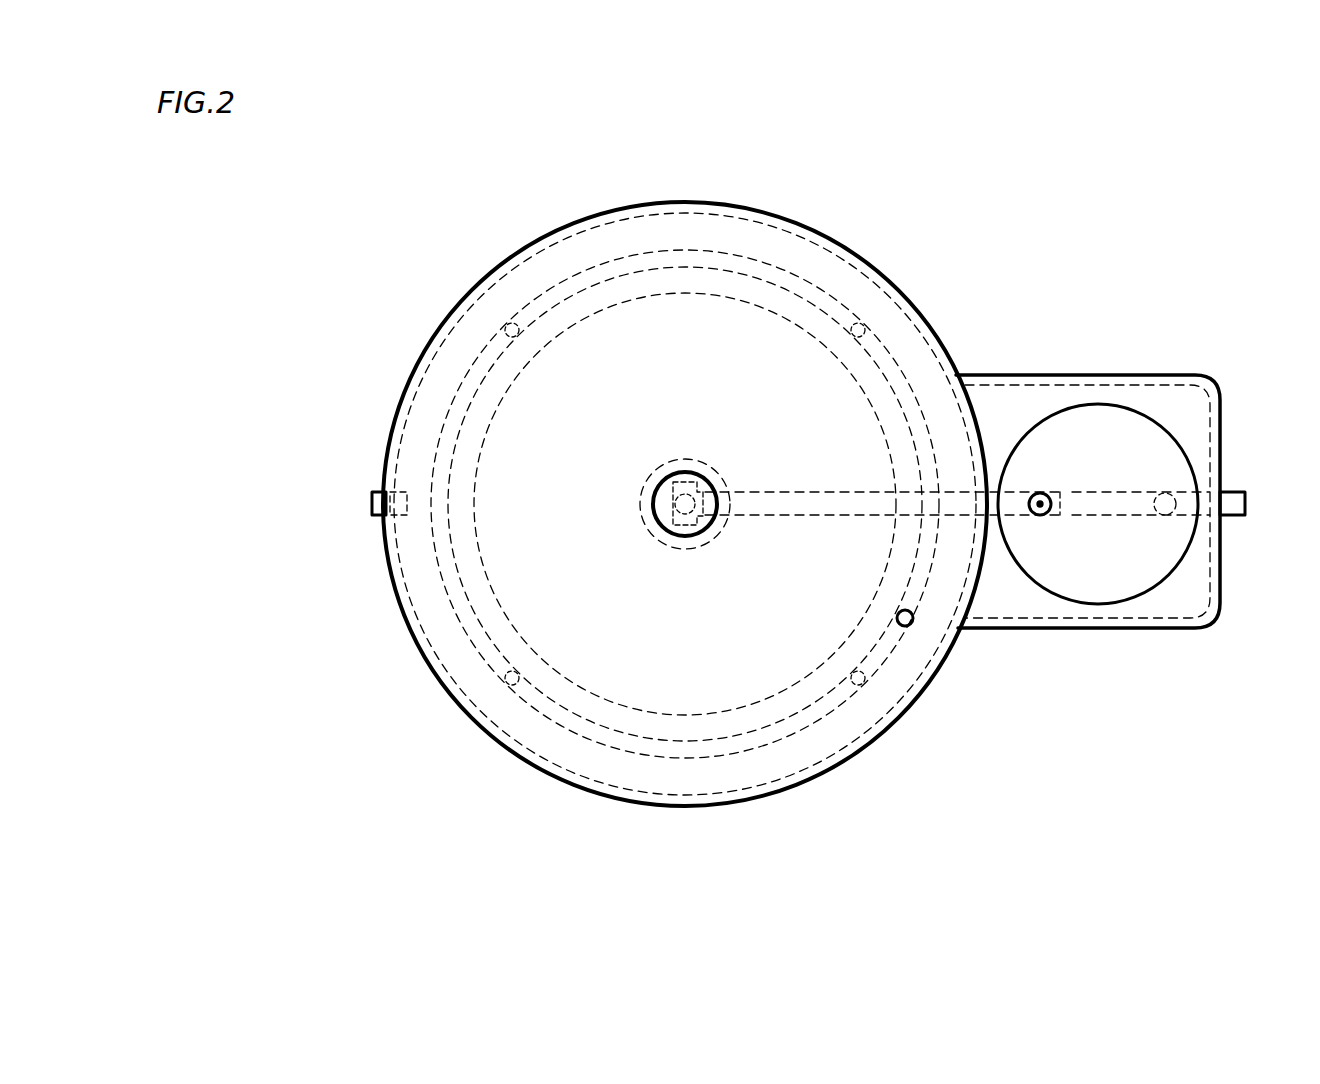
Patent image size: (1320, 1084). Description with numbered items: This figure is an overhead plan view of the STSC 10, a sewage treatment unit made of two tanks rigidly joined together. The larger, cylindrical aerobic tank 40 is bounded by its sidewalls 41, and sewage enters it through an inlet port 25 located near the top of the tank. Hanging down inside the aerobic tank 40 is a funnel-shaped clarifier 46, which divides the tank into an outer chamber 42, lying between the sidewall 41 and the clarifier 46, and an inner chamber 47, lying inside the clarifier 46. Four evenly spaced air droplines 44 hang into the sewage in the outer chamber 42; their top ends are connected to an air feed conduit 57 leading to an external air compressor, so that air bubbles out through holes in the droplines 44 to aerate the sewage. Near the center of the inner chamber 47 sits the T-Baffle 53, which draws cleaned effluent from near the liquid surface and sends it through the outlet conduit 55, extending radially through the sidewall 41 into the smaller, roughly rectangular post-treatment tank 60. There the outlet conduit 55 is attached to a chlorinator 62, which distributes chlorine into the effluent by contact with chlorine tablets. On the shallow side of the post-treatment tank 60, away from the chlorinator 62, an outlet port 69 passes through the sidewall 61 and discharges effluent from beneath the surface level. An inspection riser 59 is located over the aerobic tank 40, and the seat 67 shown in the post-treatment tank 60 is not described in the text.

The STSC 10 is at (750, 858).
The inlet port 25 is at (375, 497).
The aerobic tank 40 is at (698, 790).
The sidewalls 41 is at (826, 235).
The outer chamber 42 is at (568, 694).
The air droplines 44 is at (511, 322).
The clarifier 46 is at (832, 768).
The inner chamber 47 is at (624, 368).
The T-Baffle 53 is at (672, 532).
The outlet conduit 55 is at (842, 517).
The air feed conduit 57 is at (893, 645).
The inspection riser 59 is at (690, 478).
The post-treatment tank 60 is at (1198, 608).
The sidewall 61 is at (1142, 375).
The chlorinator 62 is at (1040, 492).
The handle opening 67 is at (1158, 430).
The outlet port 69 is at (1230, 492).